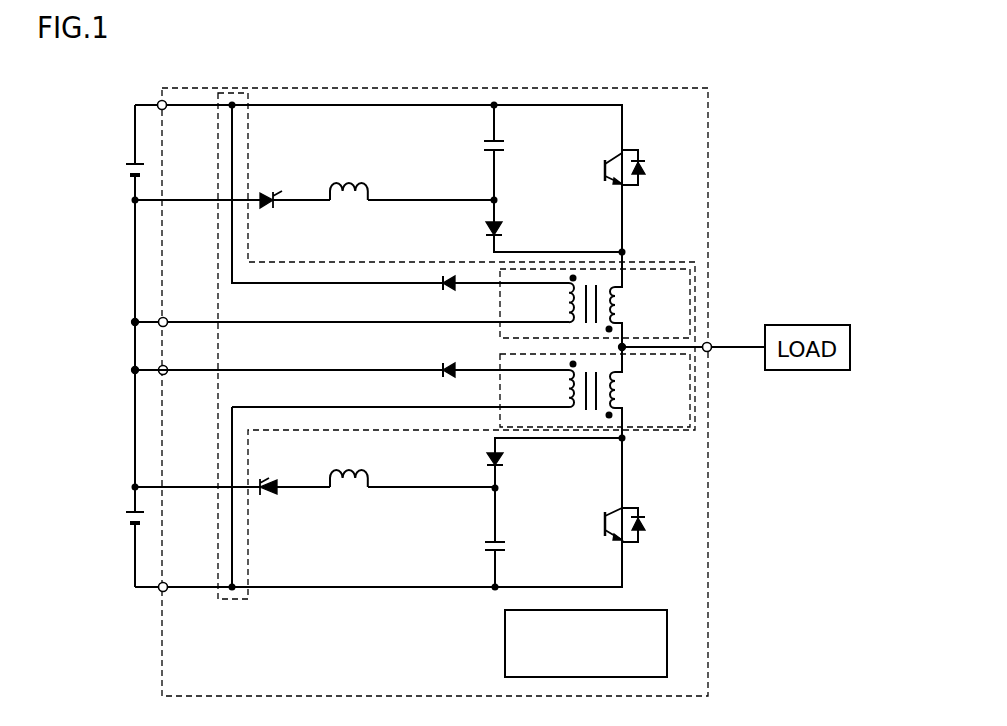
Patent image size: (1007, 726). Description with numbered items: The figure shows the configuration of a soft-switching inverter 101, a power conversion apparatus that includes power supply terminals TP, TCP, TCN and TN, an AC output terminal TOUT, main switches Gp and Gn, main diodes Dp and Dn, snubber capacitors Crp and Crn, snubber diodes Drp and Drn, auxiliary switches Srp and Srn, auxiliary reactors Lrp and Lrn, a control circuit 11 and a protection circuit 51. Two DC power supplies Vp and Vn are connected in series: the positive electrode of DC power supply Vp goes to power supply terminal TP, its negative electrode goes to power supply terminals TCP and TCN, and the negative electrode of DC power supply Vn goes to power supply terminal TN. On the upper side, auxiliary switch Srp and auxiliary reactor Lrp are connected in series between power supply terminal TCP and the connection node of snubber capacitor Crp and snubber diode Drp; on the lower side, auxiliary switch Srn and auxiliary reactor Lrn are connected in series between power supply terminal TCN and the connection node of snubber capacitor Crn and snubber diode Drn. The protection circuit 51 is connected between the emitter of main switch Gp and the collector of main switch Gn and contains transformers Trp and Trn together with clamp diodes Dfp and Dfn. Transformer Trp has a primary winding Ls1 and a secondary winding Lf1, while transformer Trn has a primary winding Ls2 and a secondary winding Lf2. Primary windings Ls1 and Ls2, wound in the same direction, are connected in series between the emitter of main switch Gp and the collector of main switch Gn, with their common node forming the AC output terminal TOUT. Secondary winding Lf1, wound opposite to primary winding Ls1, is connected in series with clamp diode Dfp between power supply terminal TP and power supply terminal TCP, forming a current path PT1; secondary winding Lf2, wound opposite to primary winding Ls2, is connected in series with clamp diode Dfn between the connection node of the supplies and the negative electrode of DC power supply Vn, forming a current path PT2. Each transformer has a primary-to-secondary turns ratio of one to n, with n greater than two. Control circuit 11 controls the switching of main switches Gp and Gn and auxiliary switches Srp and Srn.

The soft-switching inverter 101 is at (679, 87).
The control circuit 11 is at (653, 608).
The protection circuit 51 is at (658, 261).
The power supply terminal TP is at (160, 100).
The power supply terminal TN is at (160, 592).
The power supply terminal TCP is at (160, 318).
The power supply terminal TCN is at (160, 374).
The AC output terminal TOUT is at (710, 343).
The DC power supply Vp is at (126, 164).
The DC power supply Vn is at (126, 512).
The auxiliary switch Srp is at (272, 192).
The auxiliary switch Srn is at (268, 496).
The auxiliary reactor Lrp is at (355, 180).
The auxiliary reactor Lrn is at (345, 490).
The snubber capacitor Crp is at (503, 147).
The snubber capacitor Crn is at (500, 555).
The snubber diode Drp is at (503, 230).
The snubber diode Drn is at (498, 472).
The main switch Gp is at (605, 168).
The main switch Gn is at (605, 522).
The main diode Dp is at (645, 158).
The main diode Dn is at (645, 510).
The clamp diode Dfp is at (438, 290).
The clamp diode Dfn is at (438, 377).
The current path PT1 is at (320, 283).
The current path PT2 is at (320, 370).
The transformer Trp is at (631, 287).
The transformer Trn is at (631, 406).
The secondary winding Lf1 is at (566, 300).
The secondary winding Lf2 is at (566, 388).
The primary winding Ls1 is at (618, 300).
The primary winding Ls2 is at (618, 388).